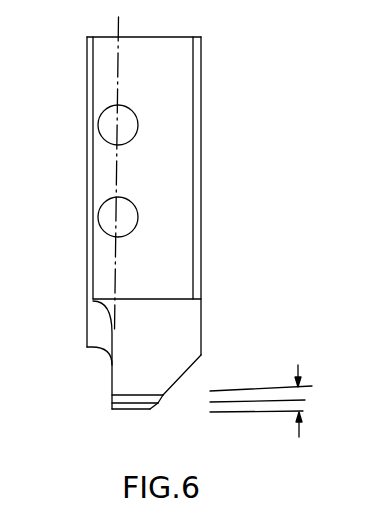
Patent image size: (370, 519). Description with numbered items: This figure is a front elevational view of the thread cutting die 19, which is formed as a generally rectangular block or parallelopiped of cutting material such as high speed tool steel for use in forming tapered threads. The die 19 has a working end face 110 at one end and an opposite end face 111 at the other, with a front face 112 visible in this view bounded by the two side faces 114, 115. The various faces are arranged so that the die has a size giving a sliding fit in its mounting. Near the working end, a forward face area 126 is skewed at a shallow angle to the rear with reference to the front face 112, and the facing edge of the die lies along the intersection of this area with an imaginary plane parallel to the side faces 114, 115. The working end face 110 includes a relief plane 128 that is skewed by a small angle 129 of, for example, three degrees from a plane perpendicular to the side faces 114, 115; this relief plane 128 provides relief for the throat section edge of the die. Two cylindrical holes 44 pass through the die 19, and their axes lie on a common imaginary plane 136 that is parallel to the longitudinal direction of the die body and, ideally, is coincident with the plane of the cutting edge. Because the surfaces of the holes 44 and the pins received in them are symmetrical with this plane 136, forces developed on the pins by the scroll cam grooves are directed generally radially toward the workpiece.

The die 19 is at (160, 245).
The cylindrical holes 44 is at (103, 134).
The working end face 110 is at (125, 416).
The opposite end face 111 is at (177, 37).
The front face 112 is at (175, 193).
The side face 114 is at (86, 188).
The side face 115 is at (201, 266).
The forward face area 126 is at (182, 329).
The relief plane 128 is at (158, 397).
The small angle 129 is at (301, 398).
The common imaginary plane 136 is at (118, 27).